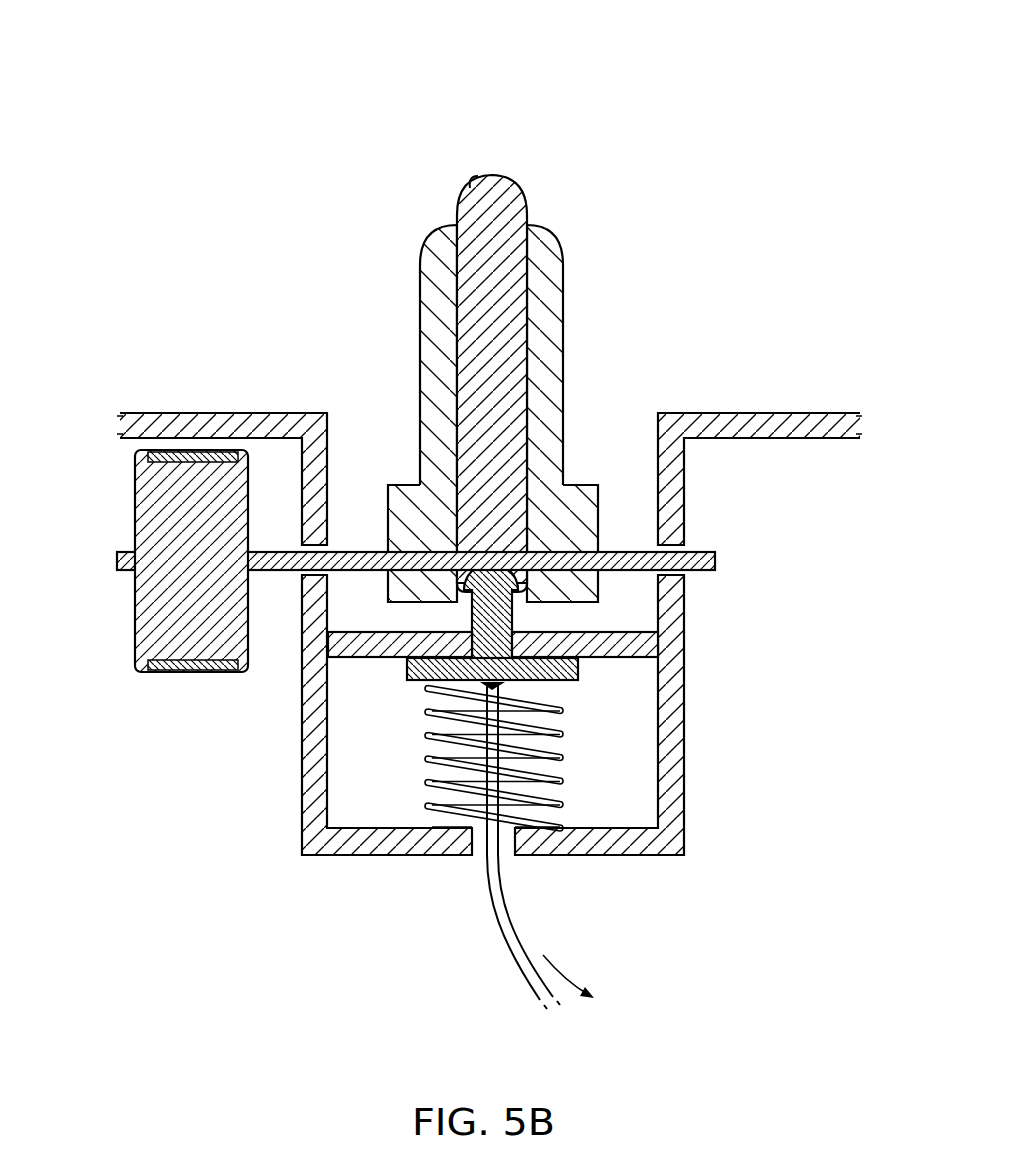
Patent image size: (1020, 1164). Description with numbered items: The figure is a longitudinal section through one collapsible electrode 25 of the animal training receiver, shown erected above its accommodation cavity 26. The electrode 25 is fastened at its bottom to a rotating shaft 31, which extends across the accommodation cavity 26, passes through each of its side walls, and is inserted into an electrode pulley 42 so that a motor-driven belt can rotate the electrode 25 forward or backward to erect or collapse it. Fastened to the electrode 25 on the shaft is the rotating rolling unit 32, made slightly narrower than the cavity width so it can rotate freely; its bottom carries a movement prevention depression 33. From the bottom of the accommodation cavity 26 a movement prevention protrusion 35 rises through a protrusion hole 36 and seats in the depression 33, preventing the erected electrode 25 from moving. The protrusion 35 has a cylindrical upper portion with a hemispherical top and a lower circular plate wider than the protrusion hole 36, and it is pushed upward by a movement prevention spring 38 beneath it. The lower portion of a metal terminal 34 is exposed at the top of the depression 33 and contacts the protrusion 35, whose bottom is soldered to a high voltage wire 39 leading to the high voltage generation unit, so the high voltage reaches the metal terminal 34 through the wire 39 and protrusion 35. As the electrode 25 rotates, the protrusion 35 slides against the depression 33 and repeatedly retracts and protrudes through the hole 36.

The electrode 25 is at (573, 240).
The accommodation cavity 26 is at (365, 432).
The rotating shaft 31 is at (712, 553).
The rotating rolling unit 32 is at (580, 498).
The movement prevention depression 33 is at (470, 577).
The metal terminal 34 is at (502, 183).
The movement prevention protrusion 35 is at (513, 598).
The protrusion hole 36 is at (517, 627).
The movement prevention spring 38 is at (562, 757).
The high voltage wire 39 is at (517, 937).
The electrode pulley 42 is at (160, 613).